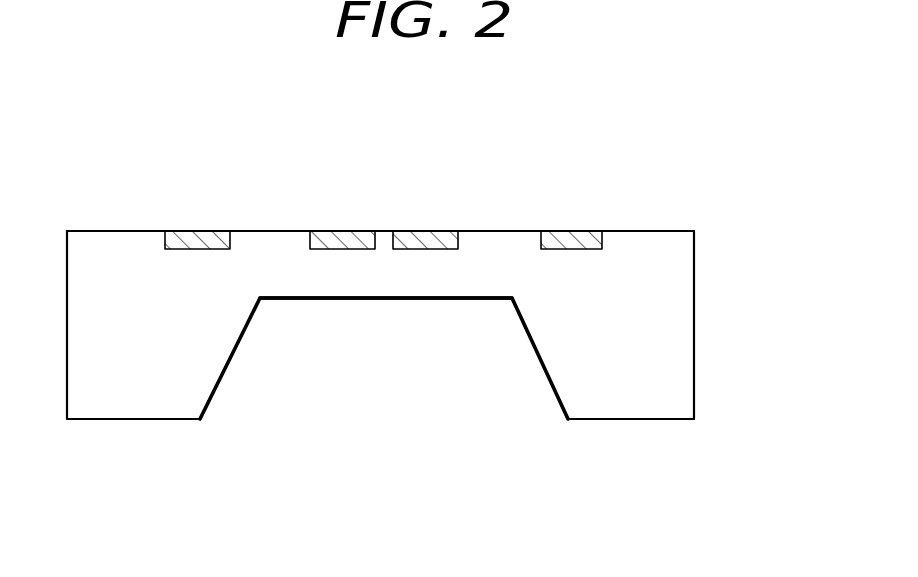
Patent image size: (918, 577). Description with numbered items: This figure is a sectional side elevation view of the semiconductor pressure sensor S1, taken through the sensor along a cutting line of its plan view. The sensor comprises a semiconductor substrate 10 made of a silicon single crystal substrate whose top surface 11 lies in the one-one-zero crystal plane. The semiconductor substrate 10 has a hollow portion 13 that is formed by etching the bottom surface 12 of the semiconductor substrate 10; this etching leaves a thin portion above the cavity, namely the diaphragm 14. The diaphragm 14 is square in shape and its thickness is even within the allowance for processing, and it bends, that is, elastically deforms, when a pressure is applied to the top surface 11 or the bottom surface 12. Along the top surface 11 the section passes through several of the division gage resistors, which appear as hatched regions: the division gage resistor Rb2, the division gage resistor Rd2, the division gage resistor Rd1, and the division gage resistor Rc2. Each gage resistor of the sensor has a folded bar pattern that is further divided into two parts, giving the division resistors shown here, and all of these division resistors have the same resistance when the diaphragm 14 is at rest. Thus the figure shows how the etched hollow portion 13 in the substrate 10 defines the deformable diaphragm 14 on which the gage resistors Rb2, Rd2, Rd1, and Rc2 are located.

The semiconductor pressure sensor S1 is at (698, 178).
The semiconductor substrate 10 is at (695, 305).
The top surface 11 is at (655, 231).
The bottom surface 12 is at (647, 419).
The hollow portion 13 is at (442, 338).
The diaphragm 14 is at (498, 231).
The division gage resistor Rb2 is at (199, 231).
The division gage resistor Rd2 is at (347, 231).
The division gage resistor Rd1 is at (427, 231).
The division gage resistor Rc2 is at (575, 231).